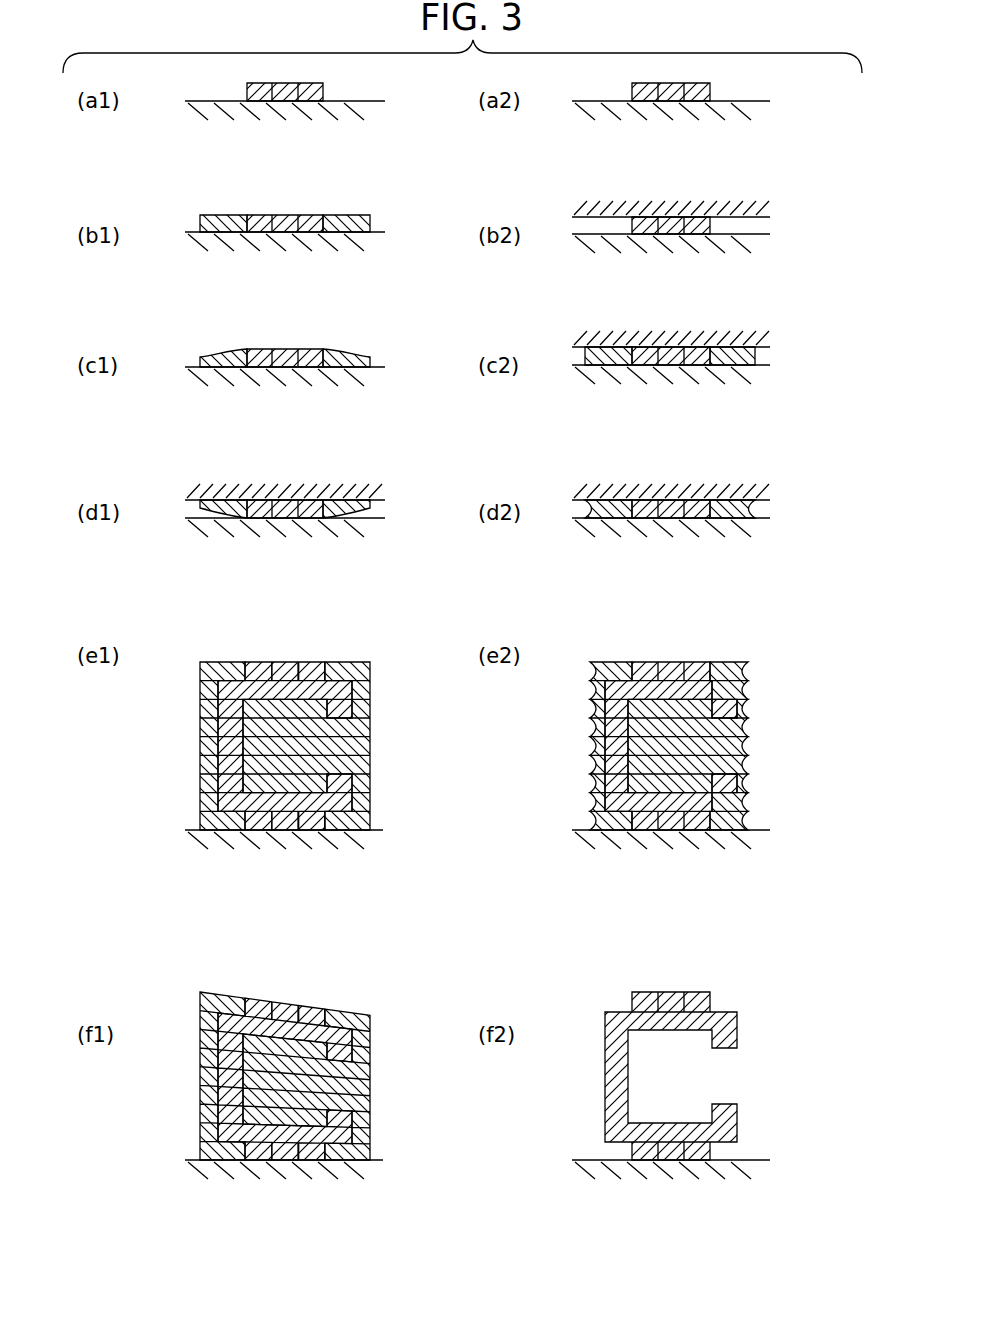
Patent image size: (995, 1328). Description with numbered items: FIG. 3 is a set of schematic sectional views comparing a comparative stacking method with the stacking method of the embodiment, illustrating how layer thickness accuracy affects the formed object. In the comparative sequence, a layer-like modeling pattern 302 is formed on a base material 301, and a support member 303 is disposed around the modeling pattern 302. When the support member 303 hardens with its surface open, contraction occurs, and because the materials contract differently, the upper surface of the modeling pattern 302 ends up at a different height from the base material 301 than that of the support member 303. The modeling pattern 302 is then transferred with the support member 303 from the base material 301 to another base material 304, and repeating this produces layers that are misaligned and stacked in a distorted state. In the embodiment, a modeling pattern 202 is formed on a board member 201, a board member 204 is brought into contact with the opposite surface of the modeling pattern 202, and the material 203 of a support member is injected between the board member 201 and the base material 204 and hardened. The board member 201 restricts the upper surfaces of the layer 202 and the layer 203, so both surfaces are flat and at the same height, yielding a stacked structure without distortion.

The board member 201 is at (704, 300).
The modeling pattern 202 is at (715, 291).
The material of a support member 203 is at (710, 437).
The board member 204 is at (705, 708).
The base material 301 is at (370, 107).
The modeling pattern 302 is at (460, 648).
The support member 303 is at (471, 659).
The base material 304 is at (360, 524).